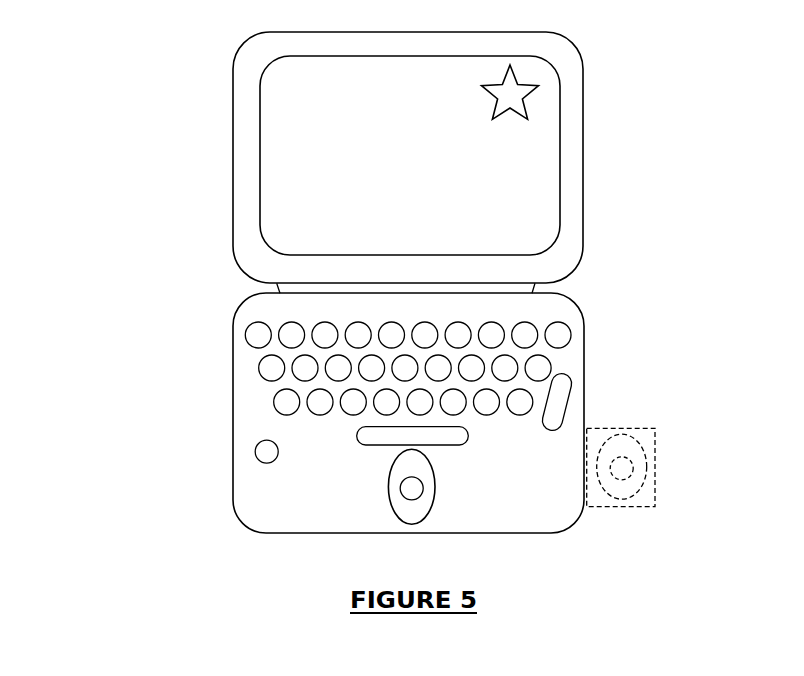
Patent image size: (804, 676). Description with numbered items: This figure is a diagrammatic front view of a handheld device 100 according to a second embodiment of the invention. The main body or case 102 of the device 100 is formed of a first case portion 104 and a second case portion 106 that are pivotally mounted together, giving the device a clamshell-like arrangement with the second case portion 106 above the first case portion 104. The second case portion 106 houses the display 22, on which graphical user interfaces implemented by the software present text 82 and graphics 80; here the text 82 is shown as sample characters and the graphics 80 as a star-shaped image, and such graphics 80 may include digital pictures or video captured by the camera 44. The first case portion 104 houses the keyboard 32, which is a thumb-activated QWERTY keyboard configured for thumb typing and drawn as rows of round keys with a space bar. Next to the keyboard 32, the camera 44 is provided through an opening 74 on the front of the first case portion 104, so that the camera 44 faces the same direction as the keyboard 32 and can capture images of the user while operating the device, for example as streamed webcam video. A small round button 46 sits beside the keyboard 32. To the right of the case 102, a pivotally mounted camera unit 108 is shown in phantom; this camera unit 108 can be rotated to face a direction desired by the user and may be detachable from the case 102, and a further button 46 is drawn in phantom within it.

The handheld device 100 is at (100, 118).
The display 22 is at (283, 162).
The text 82 is at (402, 142).
The graphics 80 is at (488, 94).
The second case portion 106 is at (583, 163).
The first case portion 104 is at (585, 358).
The case 102 is at (585, 406).
The keyboard 32 is at (248, 412).
The button 46 is at (278, 447).
The opening 74 is at (388, 473).
The camera 44 is at (422, 490).
The camera unit 108 is at (655, 468).